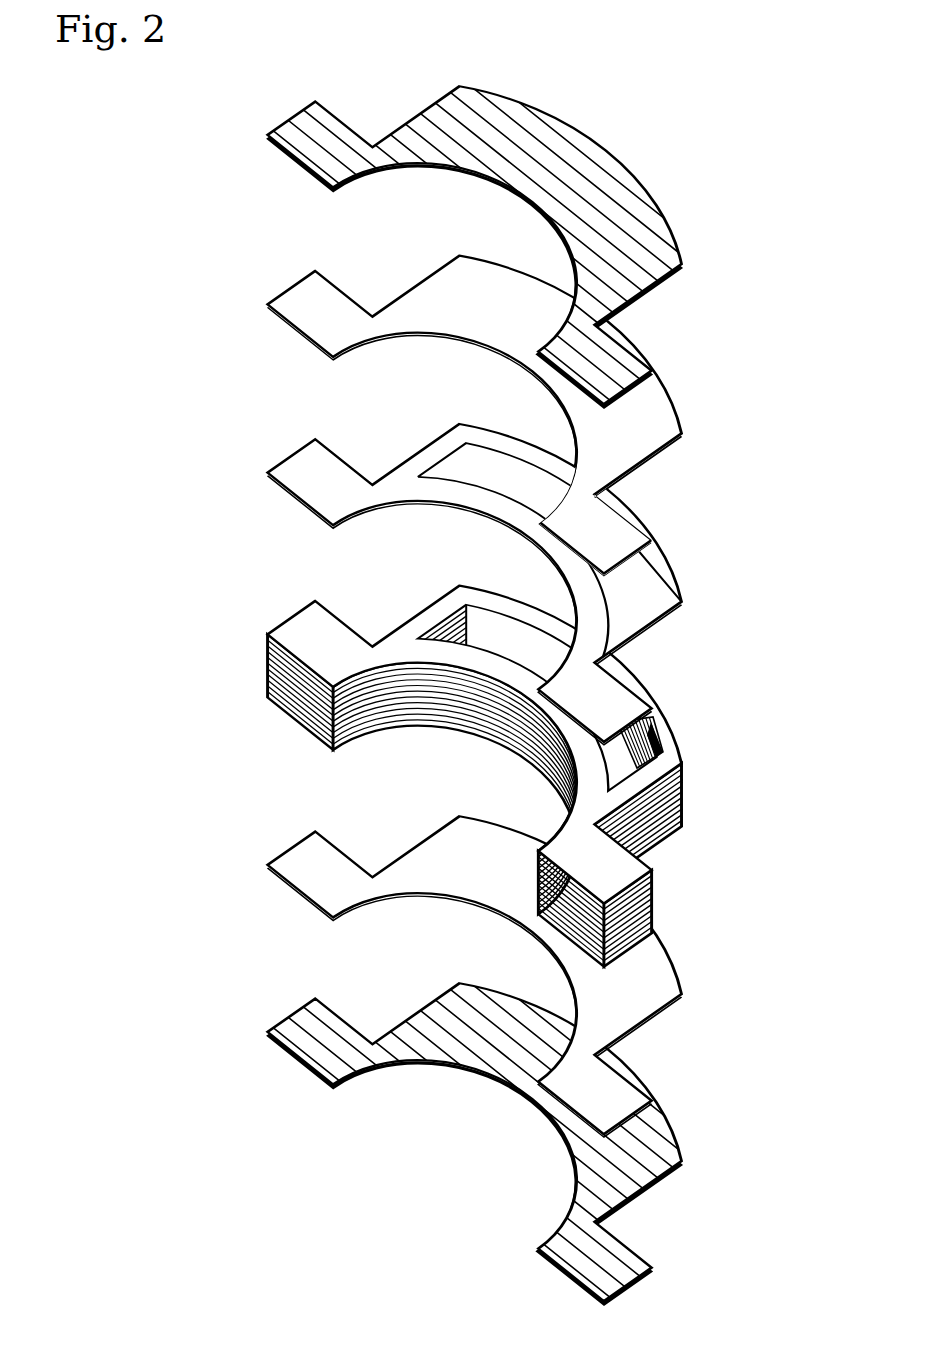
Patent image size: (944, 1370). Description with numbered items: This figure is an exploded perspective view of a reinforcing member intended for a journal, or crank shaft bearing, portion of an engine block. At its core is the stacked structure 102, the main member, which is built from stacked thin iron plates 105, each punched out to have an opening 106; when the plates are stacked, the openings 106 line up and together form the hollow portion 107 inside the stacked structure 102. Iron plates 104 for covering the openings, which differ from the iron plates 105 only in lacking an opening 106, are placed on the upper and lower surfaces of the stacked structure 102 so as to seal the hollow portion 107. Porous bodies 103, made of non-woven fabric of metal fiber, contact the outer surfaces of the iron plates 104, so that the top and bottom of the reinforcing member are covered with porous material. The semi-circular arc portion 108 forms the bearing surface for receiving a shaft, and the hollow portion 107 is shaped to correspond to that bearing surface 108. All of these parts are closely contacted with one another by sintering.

The stacked structure 102 is at (468, 660).
The porous body 103 is at (660, 1143).
The iron plate for covering openings 104 is at (648, 965).
The iron plate 105 is at (521, 549).
The opening 106 is at (643, 583).
The hollow portion 107 is at (607, 763).
The semi-circular arc portion 108 is at (503, 740).